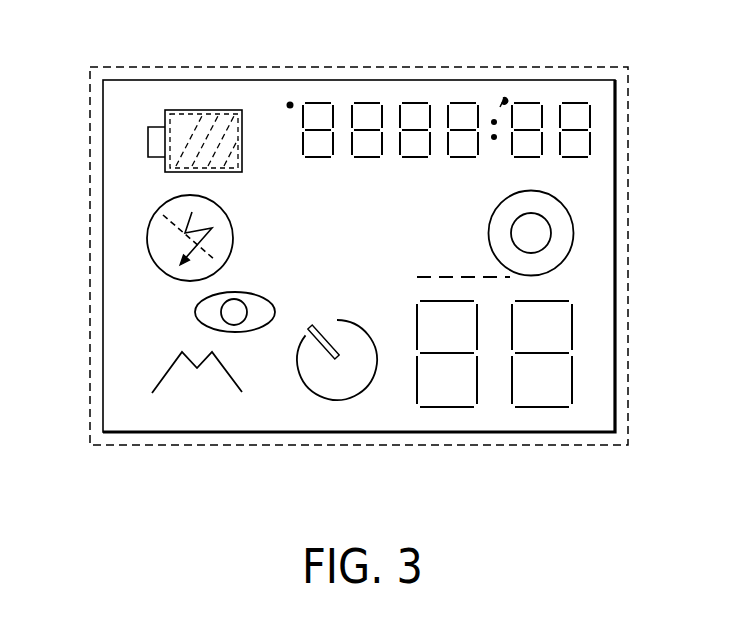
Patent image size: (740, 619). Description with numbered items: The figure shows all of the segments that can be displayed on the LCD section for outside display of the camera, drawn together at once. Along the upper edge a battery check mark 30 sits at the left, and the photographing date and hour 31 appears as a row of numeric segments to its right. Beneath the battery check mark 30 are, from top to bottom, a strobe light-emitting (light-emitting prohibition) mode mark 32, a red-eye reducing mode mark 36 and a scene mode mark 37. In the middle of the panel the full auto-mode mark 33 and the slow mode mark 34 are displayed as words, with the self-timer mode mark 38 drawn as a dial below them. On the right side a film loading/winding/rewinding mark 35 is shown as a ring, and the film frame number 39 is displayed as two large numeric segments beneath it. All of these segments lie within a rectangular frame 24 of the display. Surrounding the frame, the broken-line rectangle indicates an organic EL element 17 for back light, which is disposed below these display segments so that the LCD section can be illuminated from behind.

The organic EL element 17 is at (535, 63).
The display frame 24 is at (615, 125).
The battery check mark 30 is at (157, 127).
The photographing date and hour 31 is at (290, 103).
The strobe light-emitting mode mark 32 is at (147, 225).
The full auto-mode mark 33 is at (308, 195).
The slow mode mark 34 is at (302, 298).
The film loading/winding/rewinding mark 35 is at (573, 233).
The red-eye reducing mode mark 36 is at (195, 310).
The scene mode mark 37 is at (157, 385).
The self-timer mode mark 38 is at (337, 402).
The film frame number 39 is at (572, 352).